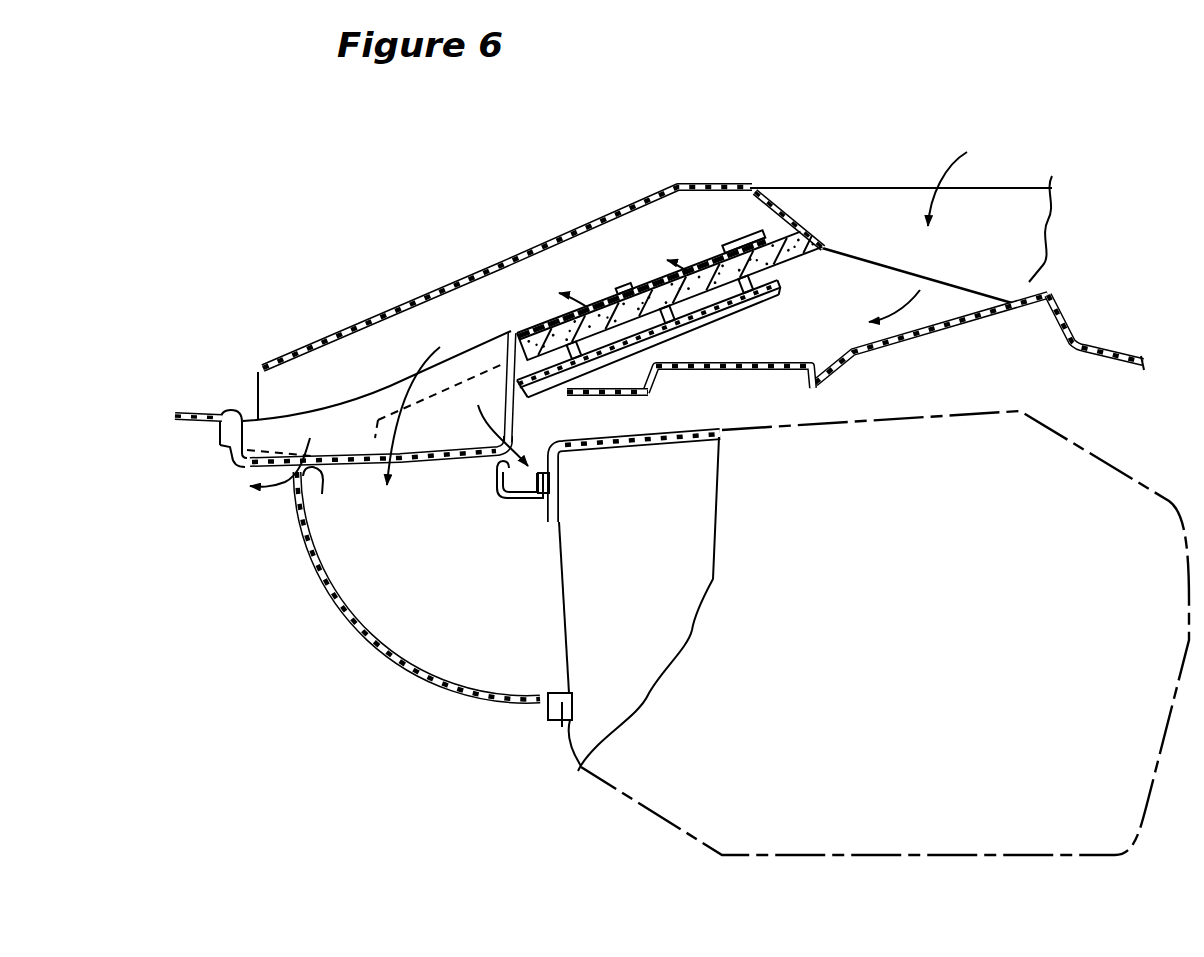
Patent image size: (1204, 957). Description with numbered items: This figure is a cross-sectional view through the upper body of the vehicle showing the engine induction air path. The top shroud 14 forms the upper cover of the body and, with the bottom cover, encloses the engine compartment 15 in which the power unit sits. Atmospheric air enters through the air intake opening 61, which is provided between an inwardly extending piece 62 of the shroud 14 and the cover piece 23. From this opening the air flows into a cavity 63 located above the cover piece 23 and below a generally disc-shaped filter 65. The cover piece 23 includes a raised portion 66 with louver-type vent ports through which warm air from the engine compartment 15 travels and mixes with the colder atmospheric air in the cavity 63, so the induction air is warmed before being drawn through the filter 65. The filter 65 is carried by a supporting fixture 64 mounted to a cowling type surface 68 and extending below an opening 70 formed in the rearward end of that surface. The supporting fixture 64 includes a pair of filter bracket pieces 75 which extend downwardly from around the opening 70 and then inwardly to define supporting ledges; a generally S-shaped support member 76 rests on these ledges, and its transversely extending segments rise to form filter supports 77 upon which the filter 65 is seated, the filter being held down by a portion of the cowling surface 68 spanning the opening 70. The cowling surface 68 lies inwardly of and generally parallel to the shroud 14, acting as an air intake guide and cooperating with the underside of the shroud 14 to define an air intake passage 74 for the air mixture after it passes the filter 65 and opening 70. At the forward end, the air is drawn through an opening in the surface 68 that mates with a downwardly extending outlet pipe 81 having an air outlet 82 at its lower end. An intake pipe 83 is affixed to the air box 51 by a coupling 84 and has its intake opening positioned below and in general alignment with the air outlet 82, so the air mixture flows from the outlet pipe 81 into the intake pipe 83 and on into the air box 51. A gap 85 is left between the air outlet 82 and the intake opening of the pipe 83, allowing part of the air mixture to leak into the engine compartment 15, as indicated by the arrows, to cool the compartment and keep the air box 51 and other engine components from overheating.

The top shroud 14 is at (446, 287).
The engine compartment 15 is at (254, 692).
The cover piece 23 is at (1048, 295).
The air box 51 is at (557, 725).
The air intake opening 61 is at (988, 198).
The inwardly extending piece 62 is at (793, 222).
The cavity 63 is at (868, 332).
The supporting fixture 64 is at (693, 327).
The filter 65 is at (815, 237).
The raised portion 66 is at (780, 370).
The cowling type surface 68 is at (514, 325).
The opening 70 is at (612, 290).
The air intake passage 74 is at (637, 232).
The filter bracket pieces 75 is at (787, 282).
The support member 76 is at (588, 388).
The filter supports 77 is at (778, 272).
The outlet pipe 81 is at (258, 368).
The air outlet 82 is at (411, 445).
The intake pipe 83 is at (365, 557).
The coupling 84 is at (547, 497).
The gap 85 is at (312, 500).